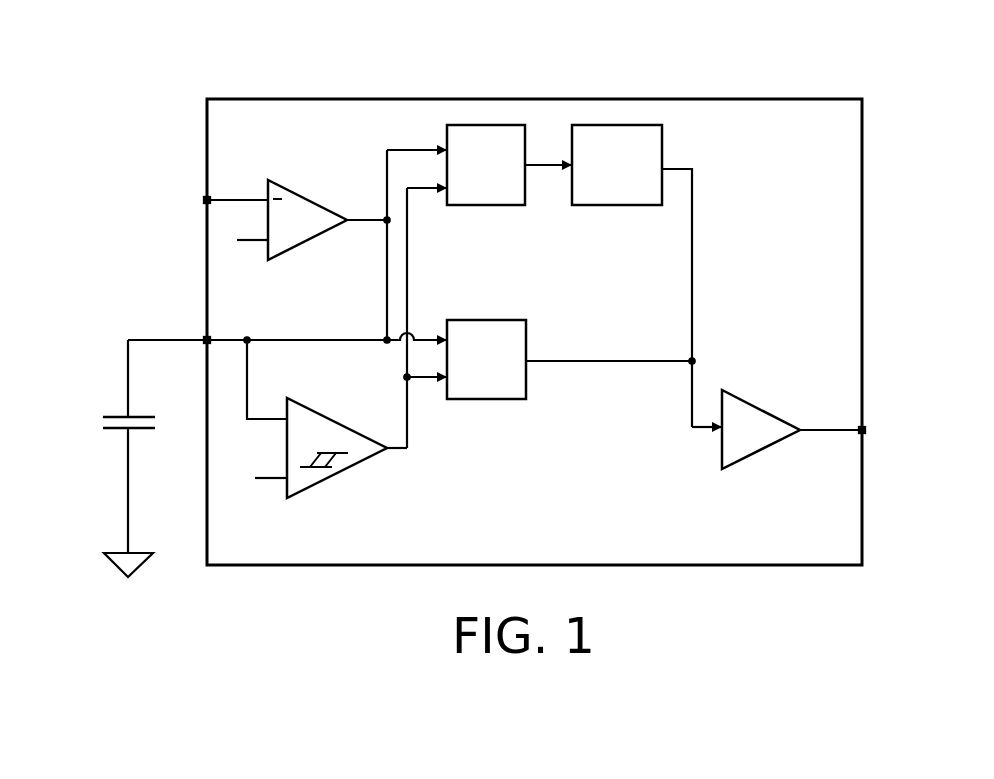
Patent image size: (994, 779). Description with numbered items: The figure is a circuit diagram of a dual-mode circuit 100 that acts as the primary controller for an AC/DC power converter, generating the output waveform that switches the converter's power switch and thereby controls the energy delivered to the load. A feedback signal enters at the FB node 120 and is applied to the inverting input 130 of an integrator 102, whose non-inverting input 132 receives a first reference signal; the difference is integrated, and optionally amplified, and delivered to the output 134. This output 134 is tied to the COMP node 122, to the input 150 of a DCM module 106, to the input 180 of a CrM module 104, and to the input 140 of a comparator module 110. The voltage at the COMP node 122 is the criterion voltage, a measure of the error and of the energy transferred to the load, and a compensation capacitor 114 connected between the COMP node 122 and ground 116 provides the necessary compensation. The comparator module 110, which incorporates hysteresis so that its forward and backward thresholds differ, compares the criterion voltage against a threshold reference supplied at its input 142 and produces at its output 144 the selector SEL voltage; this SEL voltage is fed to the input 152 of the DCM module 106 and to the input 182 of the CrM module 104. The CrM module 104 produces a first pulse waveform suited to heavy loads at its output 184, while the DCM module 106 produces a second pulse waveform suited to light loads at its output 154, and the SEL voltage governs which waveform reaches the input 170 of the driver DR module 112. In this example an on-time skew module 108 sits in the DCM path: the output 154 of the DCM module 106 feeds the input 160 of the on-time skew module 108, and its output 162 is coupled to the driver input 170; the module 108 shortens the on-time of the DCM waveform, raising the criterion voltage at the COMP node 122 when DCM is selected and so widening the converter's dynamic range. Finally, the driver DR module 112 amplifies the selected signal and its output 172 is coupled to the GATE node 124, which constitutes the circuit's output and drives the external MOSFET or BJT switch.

The dual-mode circuit 100 is at (697, 78).
The integrator 102 is at (335, 178).
The CrM module 104 is at (496, 382).
The DCM module 106 is at (500, 195).
The on-time skew module 108 is at (631, 196).
The comparator module 110 is at (376, 410).
The driver DR module 112 is at (763, 451).
The capacitor 114 is at (120, 410).
The ground 116 is at (116, 546).
The FB node 120 is at (163, 208).
The COMP node 122 is at (191, 336).
The GATE node 124 is at (904, 441).
The inverting input 130 is at (257, 194).
The non-inverting input 132 is at (257, 236).
The output 134 is at (371, 215).
The input 140 is at (281, 416).
The input 142 is at (281, 470).
The output 144 is at (441, 472).
The input 150 is at (432, 141).
The input 152 is at (438, 180).
The output 154 is at (532, 163).
The input 160 is at (568, 172).
The output 162 is at (700, 160).
The input 170 is at (710, 455).
The output 172 is at (831, 425).
The input 180 is at (442, 335).
The input 182 is at (442, 372).
The output 184 is at (565, 353).